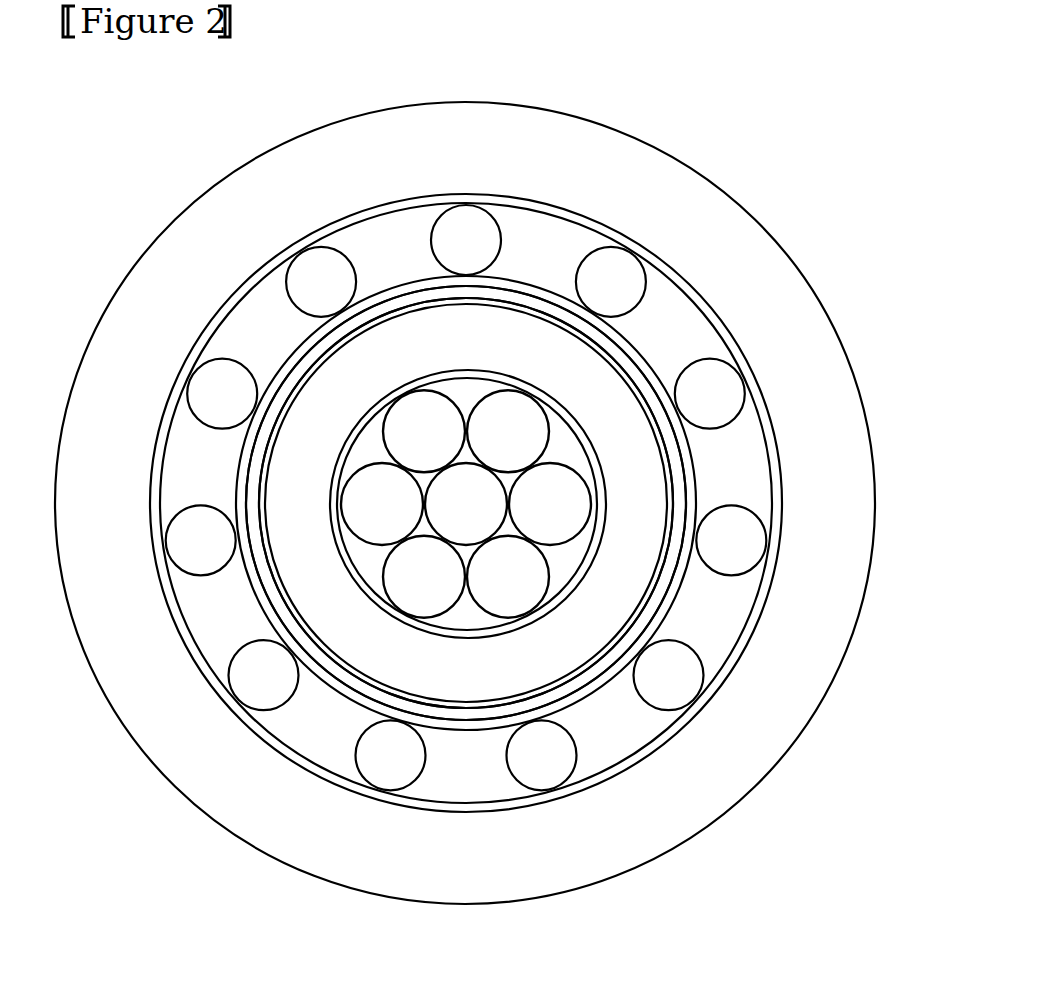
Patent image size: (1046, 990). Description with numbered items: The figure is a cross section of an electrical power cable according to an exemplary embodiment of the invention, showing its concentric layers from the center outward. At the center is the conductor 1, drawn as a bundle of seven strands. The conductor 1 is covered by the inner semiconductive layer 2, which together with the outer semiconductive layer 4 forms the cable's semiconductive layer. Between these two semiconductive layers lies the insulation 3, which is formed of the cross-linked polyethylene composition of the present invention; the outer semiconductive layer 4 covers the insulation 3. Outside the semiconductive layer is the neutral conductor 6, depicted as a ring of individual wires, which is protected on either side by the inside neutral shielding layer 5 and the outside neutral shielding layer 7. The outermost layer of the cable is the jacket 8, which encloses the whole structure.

The conductor 1 is at (475, 388).
The inner semiconductive layer 2 is at (524, 381).
The insulation 3 is at (625, 412).
The outer semiconductive layer 4 is at (670, 440).
The inside neutral shielding layer 5 is at (695, 493).
The neutral conductor 6 is at (677, 660).
The outside neutral shielding layer 7 is at (677, 722).
The jacket 8 is at (647, 837).